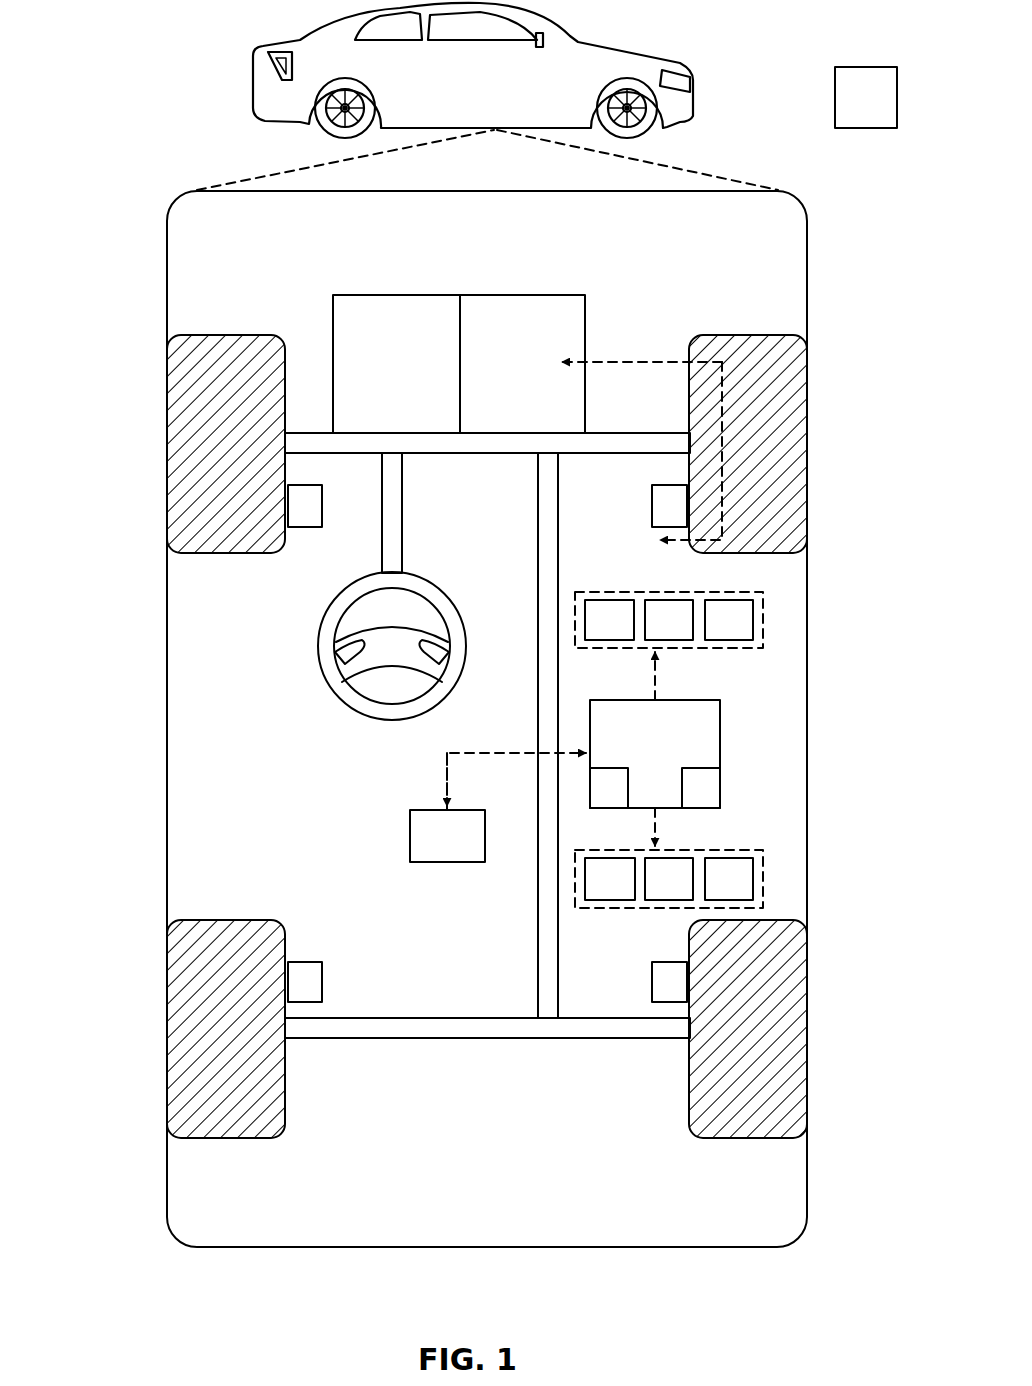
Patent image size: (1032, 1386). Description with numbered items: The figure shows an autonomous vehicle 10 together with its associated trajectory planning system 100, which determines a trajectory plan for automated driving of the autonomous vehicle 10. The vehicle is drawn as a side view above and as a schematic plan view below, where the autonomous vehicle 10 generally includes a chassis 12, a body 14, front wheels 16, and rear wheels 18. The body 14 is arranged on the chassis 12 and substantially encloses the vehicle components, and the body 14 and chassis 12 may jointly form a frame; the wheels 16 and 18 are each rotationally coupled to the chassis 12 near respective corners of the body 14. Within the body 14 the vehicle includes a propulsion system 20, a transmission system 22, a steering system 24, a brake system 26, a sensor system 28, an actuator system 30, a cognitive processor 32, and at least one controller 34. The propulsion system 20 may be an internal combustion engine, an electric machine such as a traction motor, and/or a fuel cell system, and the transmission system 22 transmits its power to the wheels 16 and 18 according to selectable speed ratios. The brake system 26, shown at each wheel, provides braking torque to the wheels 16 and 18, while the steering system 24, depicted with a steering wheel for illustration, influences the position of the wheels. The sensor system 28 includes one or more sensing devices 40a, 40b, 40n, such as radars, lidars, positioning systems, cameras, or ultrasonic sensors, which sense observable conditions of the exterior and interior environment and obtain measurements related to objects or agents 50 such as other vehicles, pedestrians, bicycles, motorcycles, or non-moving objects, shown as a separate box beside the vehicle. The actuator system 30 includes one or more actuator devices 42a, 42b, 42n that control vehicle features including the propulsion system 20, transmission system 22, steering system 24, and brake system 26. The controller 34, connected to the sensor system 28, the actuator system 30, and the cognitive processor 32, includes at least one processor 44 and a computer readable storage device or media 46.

The trajectory planning system 100 is at (120, 162).
The autonomous vehicle 10 is at (260, 77).
The chassis 12 is at (538, 962).
The body 14 is at (167, 834).
The front wheels 16 is at (255, 553).
The rear wheels 18 is at (255, 1138).
The propulsion system 20 is at (396, 364).
The transmission system 22 is at (591, 417).
The steering system 24 is at (428, 503).
The brake system 26 is at (487, 743).
The sensor system 28 is at (600, 592).
The actuator system 30 is at (606, 908).
The cognitive processor 32 is at (498, 807).
The controller 34 is at (655, 749).
The sensing device 40a is at (611, 620).
The sensing device 40b is at (671, 620).
The sensing device 40n is at (731, 620).
The actuator device 42a is at (611, 879).
The actuator device 42b is at (671, 879).
The actuator device 42n is at (731, 879).
The processor 44 is at (609, 788).
The computer readable storage device or media 46 is at (701, 788).
The agents 50 is at (863, 67).